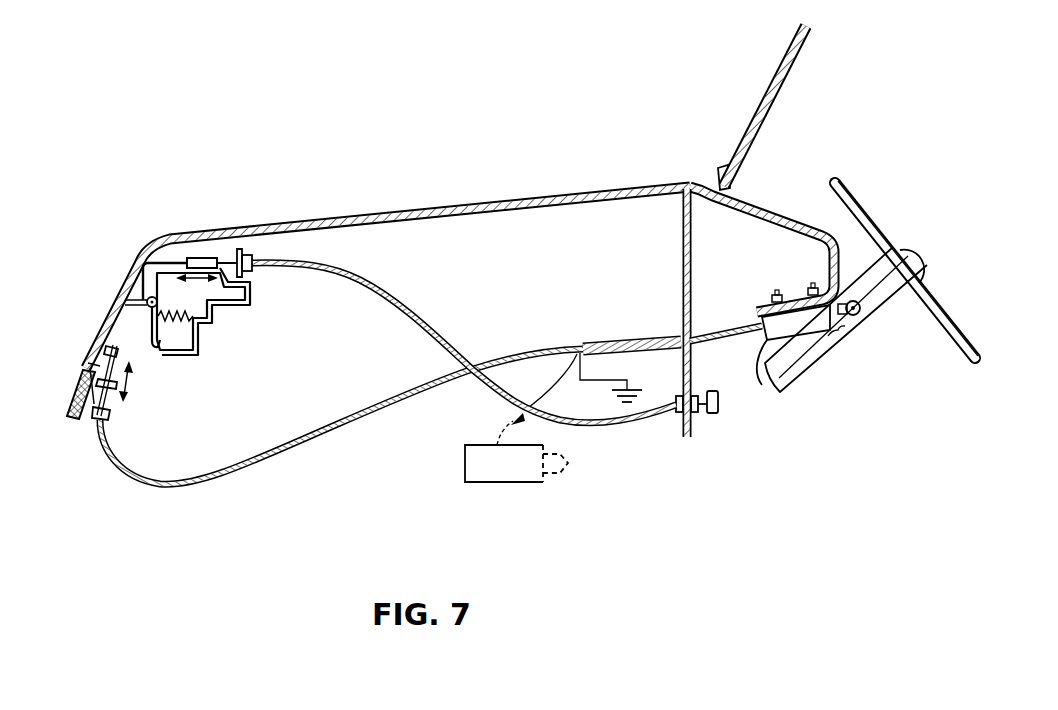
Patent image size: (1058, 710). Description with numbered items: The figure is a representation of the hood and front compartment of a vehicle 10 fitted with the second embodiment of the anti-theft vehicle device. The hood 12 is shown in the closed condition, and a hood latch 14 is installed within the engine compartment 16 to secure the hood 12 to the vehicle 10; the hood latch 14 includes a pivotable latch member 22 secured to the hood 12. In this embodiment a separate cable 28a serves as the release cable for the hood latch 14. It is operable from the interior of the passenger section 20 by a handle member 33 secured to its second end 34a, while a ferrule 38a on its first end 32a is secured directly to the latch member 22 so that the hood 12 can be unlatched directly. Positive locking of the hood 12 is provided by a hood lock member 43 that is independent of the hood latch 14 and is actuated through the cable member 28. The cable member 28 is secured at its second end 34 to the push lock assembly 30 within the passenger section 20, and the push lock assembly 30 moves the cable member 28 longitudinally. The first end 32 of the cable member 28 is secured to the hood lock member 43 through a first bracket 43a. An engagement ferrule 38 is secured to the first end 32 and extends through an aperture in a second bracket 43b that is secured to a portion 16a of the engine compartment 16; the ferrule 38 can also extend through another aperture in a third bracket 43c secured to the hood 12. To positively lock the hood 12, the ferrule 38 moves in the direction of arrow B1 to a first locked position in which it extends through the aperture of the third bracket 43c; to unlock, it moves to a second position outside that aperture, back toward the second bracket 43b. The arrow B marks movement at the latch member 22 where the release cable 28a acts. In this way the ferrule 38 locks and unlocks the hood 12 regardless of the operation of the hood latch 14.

The vehicle 10 is at (635, 108).
The hood 12 is at (405, 200).
The hood latch 14 is at (256, 340).
The engine compartment 16 is at (588, 246).
The portion of the engine compartment 16a is at (84, 425).
The passenger section 20 is at (878, 97).
The pivotable latch member 22 is at (148, 262).
The cable member 28 is at (262, 466).
The cable 28a is at (313, 259).
The push lock assembly 30 is at (757, 385).
The first end 32 is at (88, 424).
The first end 32a is at (242, 250).
The handle member 33 is at (712, 414).
The second end 34 is at (736, 345).
The second end 34a is at (695, 415).
The engagement ferrule 38 is at (88, 356).
The ferrule 38a is at (205, 257).
The hood lock member 43 is at (140, 420).
The first bracket 43a is at (128, 458).
The second bracket 43b is at (118, 388).
The third bracket 43c is at (120, 351).
The switch movement direction B is at (205, 272).
The arrow B1 is at (133, 385).